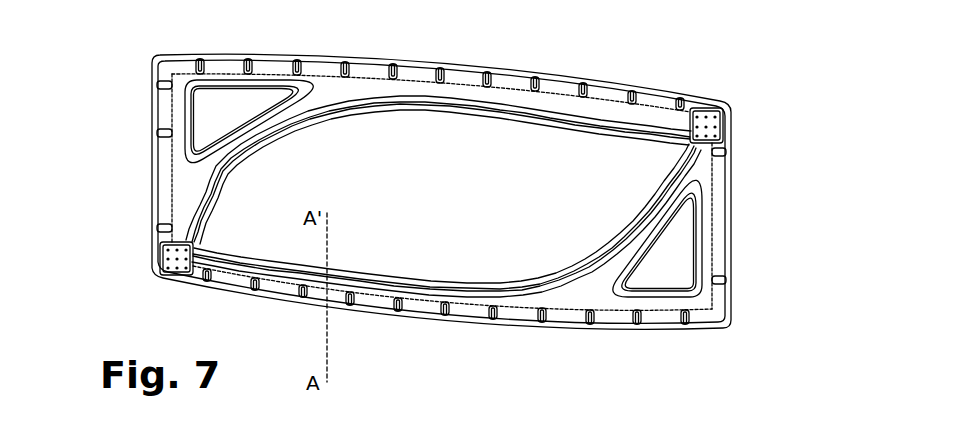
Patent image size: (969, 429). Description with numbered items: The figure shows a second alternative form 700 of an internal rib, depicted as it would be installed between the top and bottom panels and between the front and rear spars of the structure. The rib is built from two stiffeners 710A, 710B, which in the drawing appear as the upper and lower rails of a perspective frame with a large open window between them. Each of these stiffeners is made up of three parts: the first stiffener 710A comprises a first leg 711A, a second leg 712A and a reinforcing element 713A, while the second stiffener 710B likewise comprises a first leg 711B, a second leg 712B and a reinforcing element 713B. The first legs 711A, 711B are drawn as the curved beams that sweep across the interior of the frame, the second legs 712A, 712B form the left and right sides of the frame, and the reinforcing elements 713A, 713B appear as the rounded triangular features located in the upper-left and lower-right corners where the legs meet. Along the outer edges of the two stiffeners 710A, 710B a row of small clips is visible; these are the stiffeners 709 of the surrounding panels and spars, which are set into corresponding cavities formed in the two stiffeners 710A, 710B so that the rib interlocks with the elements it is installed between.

The second alternative form of the internal rib 700 is at (248, 33).
The stiffeners 709 is at (542, 323).
The stiffener 710A is at (432, 48).
The stiffener 710B is at (383, 327).
The first leg 711A is at (483, 73).
The first leg 711B is at (408, 275).
The second leg 712A is at (160, 152).
The second leg 712B is at (733, 252).
The reinforcing element 713A is at (232, 155).
The reinforcing element 713B is at (643, 233).